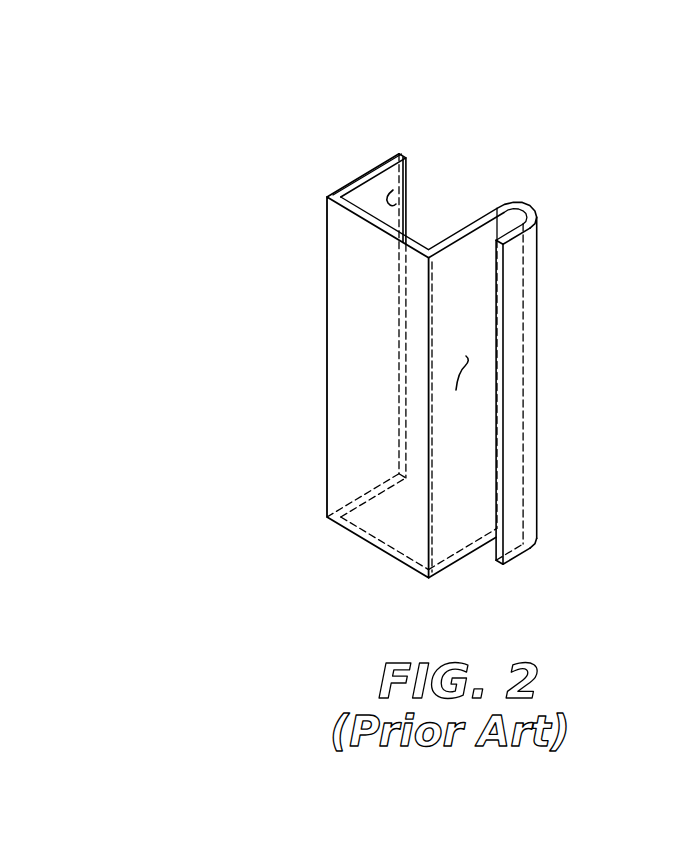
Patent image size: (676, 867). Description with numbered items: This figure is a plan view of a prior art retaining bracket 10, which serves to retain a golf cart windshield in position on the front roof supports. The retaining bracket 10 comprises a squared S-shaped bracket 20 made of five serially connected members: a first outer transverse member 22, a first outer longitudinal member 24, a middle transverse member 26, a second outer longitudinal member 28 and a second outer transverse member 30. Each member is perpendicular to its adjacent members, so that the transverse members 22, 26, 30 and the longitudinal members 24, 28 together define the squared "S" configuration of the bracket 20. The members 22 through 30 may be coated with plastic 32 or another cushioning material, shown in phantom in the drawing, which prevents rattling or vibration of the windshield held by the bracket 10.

The prior art retaining bracket 10 is at (265, 223).
The squared S-shaped bracket 20 is at (290, 122).
The first outer transverse member 22 is at (361, 166).
The first outer longitudinal member 24 is at (383, 240).
The middle transverse member 26 is at (459, 264).
The second outer longitudinal member 28 is at (527, 211).
The second outer transverse member 30 is at (526, 246).
The plastic 32 is at (414, 203).